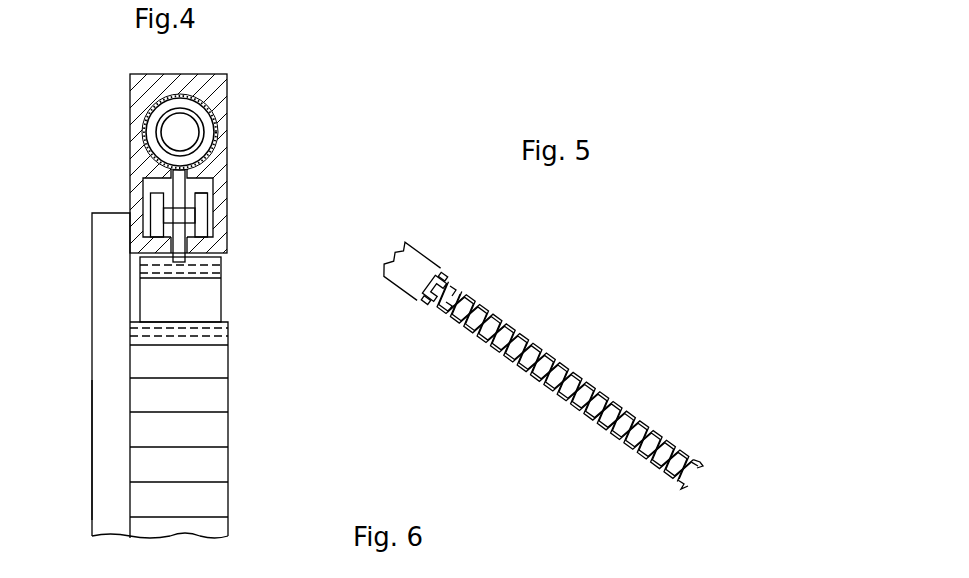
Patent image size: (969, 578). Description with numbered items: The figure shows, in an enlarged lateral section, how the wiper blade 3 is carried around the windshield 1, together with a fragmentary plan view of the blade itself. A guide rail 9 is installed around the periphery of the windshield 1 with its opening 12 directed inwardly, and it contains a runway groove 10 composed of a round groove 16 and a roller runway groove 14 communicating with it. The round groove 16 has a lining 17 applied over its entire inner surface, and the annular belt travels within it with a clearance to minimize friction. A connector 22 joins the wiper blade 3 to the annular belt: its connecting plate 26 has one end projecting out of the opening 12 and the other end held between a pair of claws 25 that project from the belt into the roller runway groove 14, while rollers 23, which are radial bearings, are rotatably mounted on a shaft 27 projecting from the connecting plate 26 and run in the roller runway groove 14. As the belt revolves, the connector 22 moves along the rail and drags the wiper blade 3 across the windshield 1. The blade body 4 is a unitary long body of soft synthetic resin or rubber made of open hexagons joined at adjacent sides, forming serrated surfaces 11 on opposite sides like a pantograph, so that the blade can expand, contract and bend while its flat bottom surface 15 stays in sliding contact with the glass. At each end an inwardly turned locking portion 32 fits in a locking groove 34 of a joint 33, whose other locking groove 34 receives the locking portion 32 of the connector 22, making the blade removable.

In FIG. 4, the windshield 1 is at (107, 363).
In FIG. 4, the wiper blade 3 is at (228, 403).
In FIG. 5, the wiper blade 3 is at (688, 433).
In FIG. 5, the blade body 4 is at (612, 433).
In FIG. 4, the guide rail 9 is at (227, 85).
In FIG. 4, the runway groove 10 is at (155, 185).
In FIG. 5, the serrated surfaces 11 is at (597, 367).
In FIG. 4, the opening 12 is at (187, 247).
In FIG. 4, the roller runway groove 14 is at (205, 187).
In FIG. 4, the flat bottom surface 15 is at (127, 467).
In FIG. 4, the round groove 16 is at (200, 113).
In FIG. 4, the lining 17 is at (155, 104).
In FIG. 4, the connector 22 is at (183, 230).
In FIG. 5, the connector 22 is at (398, 273).
In FIG. 4, the rollers 23 is at (198, 215).
In FIG. 4, the claws 25 is at (197, 180).
In FIG. 4, the connecting plate 26 is at (178, 242).
In FIG. 4, the shaft 27 is at (167, 213).
In FIG. 5, the inwardly turned locking portion 32 is at (433, 270).
In FIG. 5, the joint 33 is at (448, 275).
In FIG. 5, the locking groove 34 is at (455, 282).